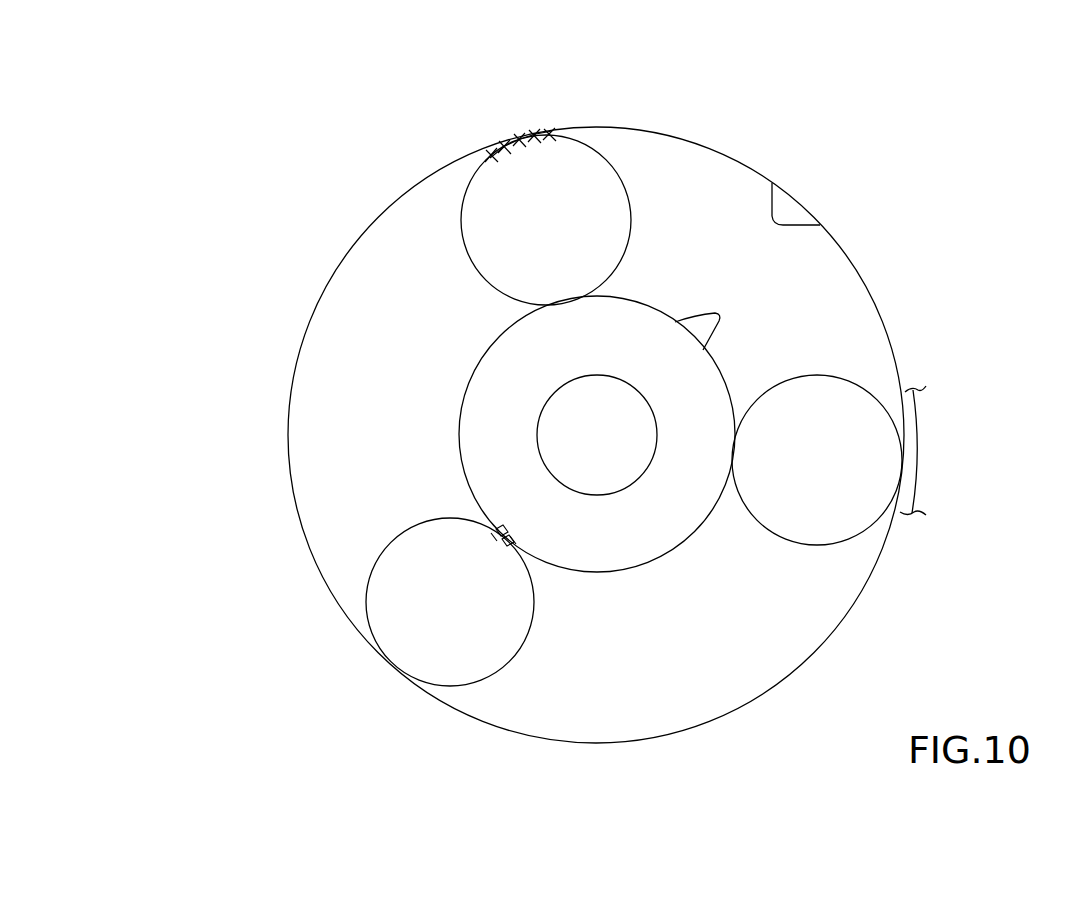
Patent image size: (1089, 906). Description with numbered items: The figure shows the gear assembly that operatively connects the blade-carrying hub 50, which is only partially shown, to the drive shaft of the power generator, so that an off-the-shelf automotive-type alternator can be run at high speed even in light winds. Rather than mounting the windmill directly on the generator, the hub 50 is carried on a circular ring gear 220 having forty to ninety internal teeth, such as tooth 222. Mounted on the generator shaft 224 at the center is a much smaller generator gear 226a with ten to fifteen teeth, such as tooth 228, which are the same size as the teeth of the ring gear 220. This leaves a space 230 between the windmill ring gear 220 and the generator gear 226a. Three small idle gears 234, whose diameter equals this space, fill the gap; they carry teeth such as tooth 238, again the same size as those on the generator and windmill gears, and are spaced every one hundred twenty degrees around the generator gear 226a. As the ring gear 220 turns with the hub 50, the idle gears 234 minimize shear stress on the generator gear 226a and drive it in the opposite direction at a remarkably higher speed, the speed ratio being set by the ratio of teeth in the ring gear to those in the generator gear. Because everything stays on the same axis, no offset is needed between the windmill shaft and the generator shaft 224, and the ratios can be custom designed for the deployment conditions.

The hub 50 is at (922, 458).
The circular ring gear 220 is at (872, 293).
The tooth 222 is at (778, 207).
The generator shaft 224 is at (593, 433).
The generator gear 226a is at (615, 547).
The tooth 228 is at (700, 310).
The space 230 is at (363, 357).
The idle gear 234 is at (805, 517).
The tooth 238 is at (528, 637).